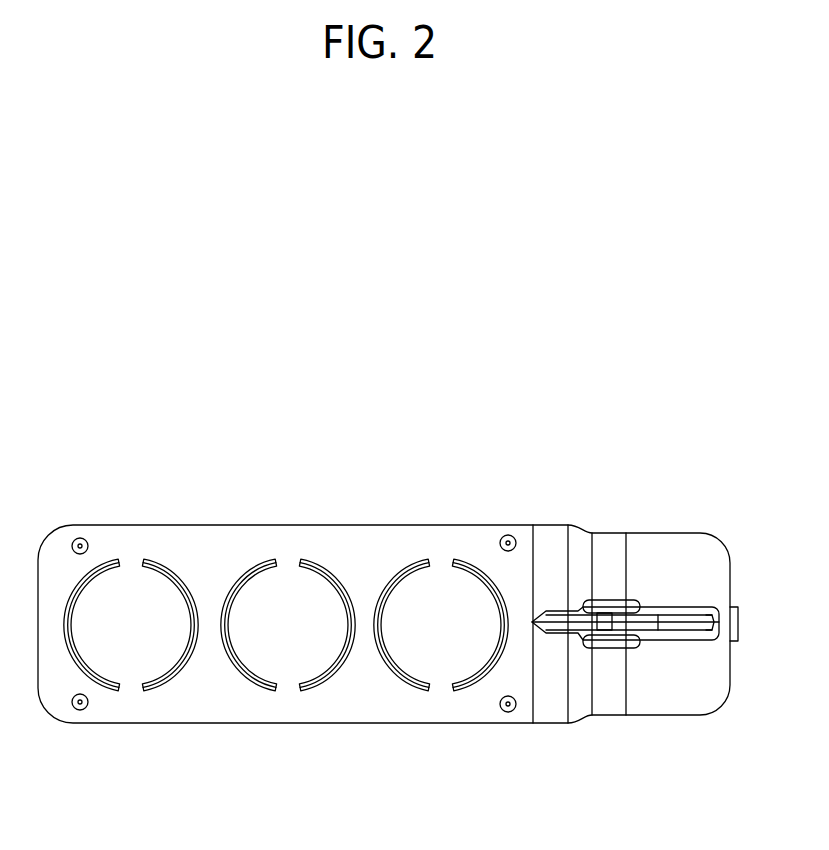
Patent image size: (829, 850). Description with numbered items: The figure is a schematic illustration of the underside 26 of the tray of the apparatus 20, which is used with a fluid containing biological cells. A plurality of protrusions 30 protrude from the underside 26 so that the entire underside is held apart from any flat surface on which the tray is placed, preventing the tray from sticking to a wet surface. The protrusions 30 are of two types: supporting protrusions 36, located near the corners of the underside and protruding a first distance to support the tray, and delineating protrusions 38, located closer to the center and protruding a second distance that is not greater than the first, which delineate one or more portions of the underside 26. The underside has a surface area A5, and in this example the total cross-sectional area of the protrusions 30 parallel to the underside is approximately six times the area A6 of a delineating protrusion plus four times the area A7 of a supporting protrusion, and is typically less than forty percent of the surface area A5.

The apparatus 20 is at (142, 367).
The underside 26 is at (240, 565).
The protrusions 30 is at (406, 568).
The supporting protrusions 36 is at (528, 530).
The delineating protrusions 38 is at (377, 552).
The surface area of the underside A5 is at (225, 709).
The cross-sectional area of a delineating protrusion A6 is at (202, 592).
The cross-sectional area of a supporting protrusion A7 is at (527, 719).